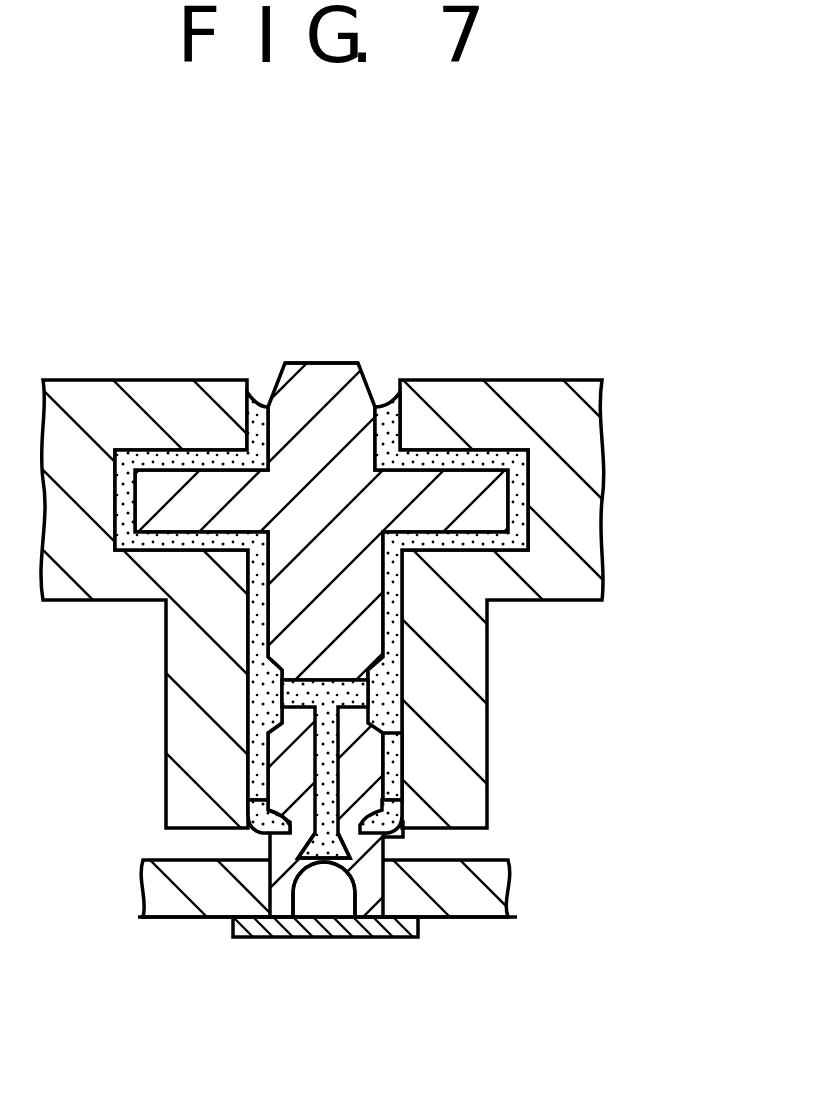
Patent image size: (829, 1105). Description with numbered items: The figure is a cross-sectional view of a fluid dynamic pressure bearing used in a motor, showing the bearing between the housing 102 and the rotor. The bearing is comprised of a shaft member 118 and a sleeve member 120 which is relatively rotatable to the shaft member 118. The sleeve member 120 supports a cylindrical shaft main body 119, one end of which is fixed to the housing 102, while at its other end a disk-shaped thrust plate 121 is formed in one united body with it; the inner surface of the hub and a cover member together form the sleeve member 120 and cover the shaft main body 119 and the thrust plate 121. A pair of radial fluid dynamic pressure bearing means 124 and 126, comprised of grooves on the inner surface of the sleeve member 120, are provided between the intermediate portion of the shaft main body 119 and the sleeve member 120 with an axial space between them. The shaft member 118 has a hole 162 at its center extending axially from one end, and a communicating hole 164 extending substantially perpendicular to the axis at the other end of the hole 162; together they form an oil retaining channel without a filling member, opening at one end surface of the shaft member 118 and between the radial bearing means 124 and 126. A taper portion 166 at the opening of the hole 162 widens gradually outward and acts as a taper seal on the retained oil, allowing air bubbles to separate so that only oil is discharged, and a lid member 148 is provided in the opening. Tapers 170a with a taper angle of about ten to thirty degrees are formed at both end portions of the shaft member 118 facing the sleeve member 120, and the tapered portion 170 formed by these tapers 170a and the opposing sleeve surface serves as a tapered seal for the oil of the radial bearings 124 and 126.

The housing 102 is at (477, 907).
The shaft member 118 is at (304, 355).
The shaft main body 119 is at (332, 377).
The sleeve member 120 is at (492, 667).
The thrust plate 121 is at (472, 490).
The radial fluid dynamic pressure bearing means 124 is at (405, 753).
The radial fluid dynamic pressure bearing means 126 is at (402, 580).
The lid member 148 is at (263, 927).
The hole 162 is at (343, 832).
The communicating hole 164 is at (288, 692).
The taper portion 166 is at (347, 917).
The tapered portion 170 is at (250, 818).
The tapers 170a is at (277, 812).